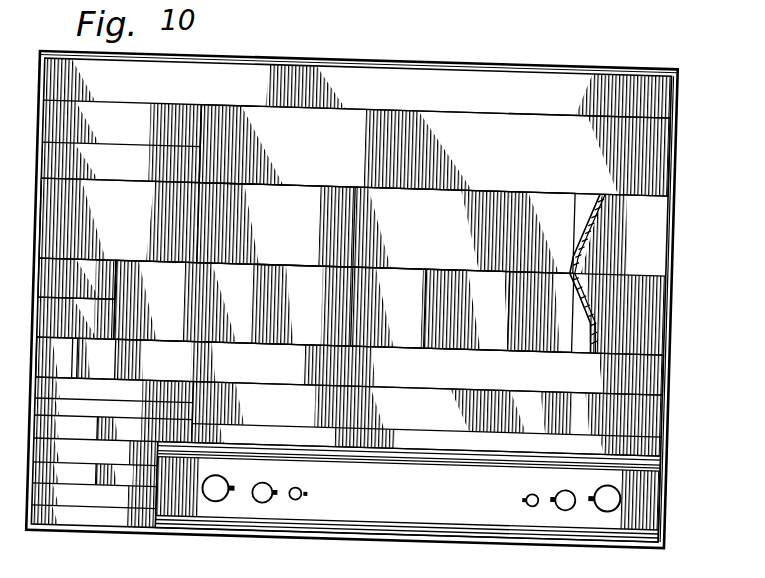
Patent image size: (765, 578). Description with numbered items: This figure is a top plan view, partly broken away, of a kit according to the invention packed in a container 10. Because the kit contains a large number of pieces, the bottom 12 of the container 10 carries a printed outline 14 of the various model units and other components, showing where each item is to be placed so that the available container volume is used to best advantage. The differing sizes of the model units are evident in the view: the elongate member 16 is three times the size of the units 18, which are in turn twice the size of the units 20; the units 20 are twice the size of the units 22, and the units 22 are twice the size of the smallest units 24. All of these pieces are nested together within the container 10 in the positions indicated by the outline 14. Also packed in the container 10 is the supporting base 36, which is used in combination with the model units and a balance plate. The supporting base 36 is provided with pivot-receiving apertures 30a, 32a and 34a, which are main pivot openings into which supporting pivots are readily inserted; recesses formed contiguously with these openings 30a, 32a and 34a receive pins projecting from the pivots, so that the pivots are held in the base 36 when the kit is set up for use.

The container 10 is at (678, 256).
The bottom 12 is at (633, 257).
The outline 14 is at (613, 278).
The elongate member 16 is at (408, 160).
The units 18 is at (141, 239).
The units 20 is at (165, 323).
The units 22 is at (90, 292).
The units 24 is at (61, 370).
The pivot-receiving aperture 30a is at (223, 477).
The pivot-receiving aperture 32a is at (265, 500).
The pivot-receiving aperture 34a is at (304, 490).
The supporting base 36 is at (432, 507).